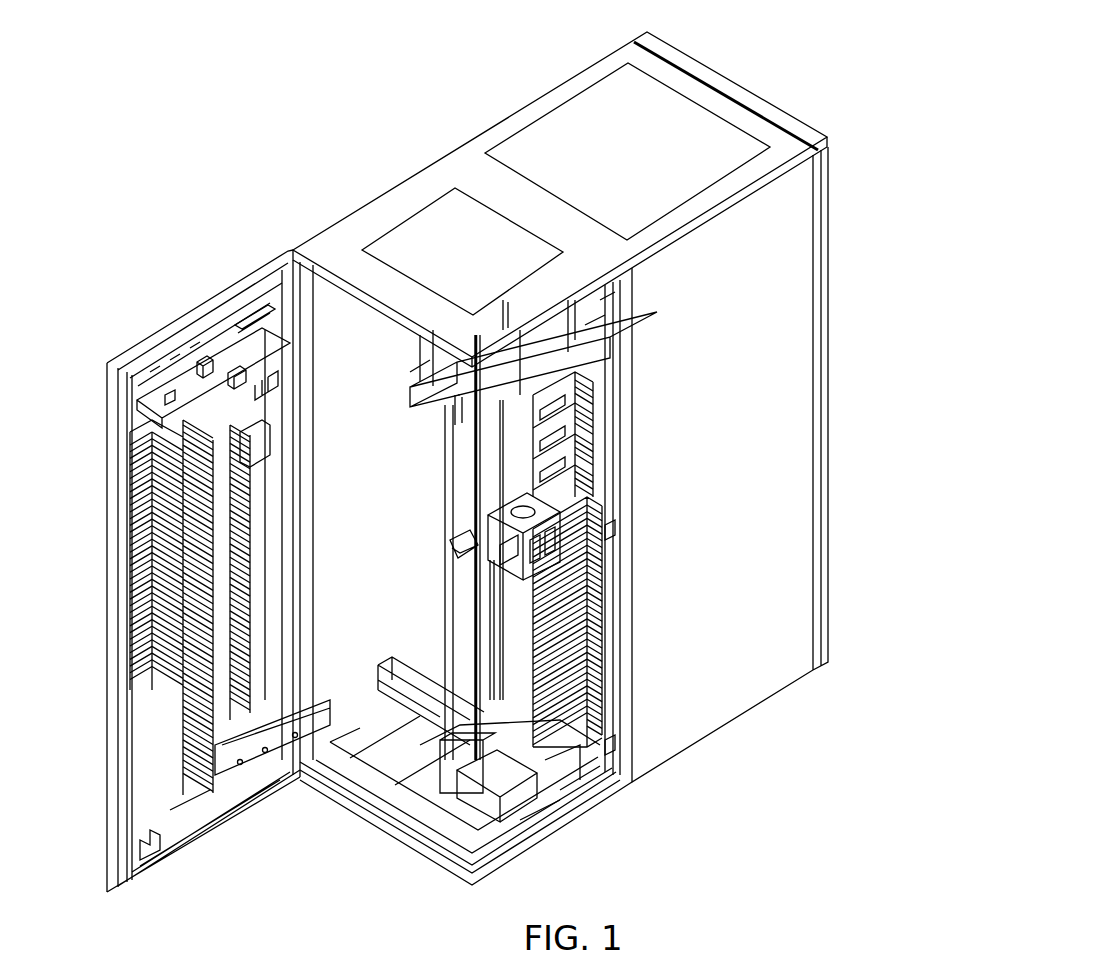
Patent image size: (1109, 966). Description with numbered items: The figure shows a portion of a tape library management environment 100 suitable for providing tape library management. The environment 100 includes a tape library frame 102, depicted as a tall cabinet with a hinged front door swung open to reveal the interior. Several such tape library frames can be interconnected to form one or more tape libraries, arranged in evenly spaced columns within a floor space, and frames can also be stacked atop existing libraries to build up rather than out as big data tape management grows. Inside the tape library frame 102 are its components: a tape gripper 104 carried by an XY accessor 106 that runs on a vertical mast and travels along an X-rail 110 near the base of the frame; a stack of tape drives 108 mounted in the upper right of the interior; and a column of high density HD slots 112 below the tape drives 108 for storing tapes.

The tape library management environment 100 is at (157, 170).
The tape library frame 102 is at (744, 78).
The tape gripper 104 is at (486, 502).
The XY accessor 106 is at (440, 546).
The tape drives 108 is at (607, 480).
The X-rail 110 is at (388, 652).
The HD slots 112 is at (607, 620).